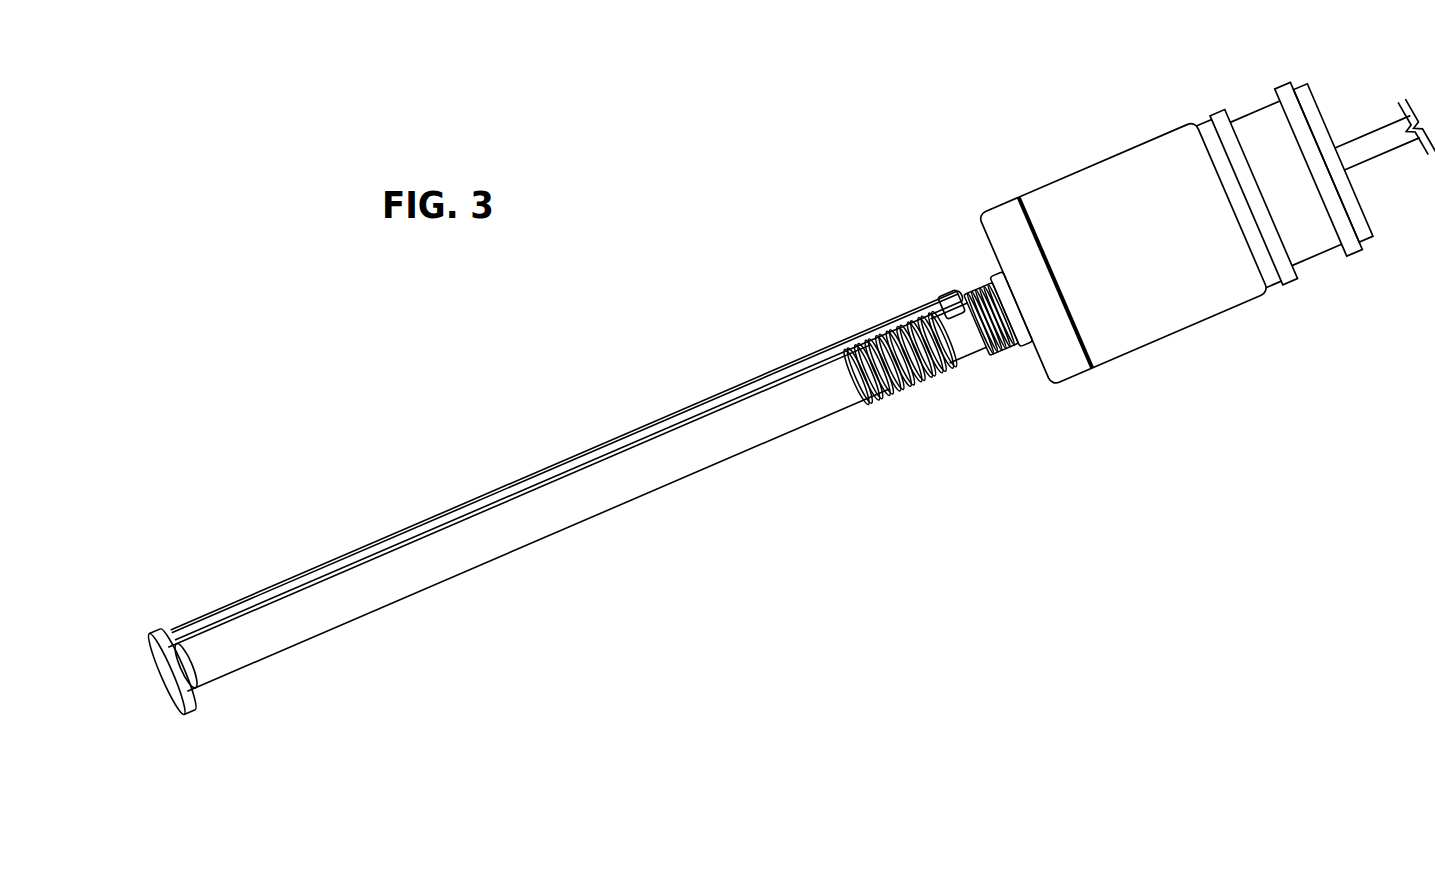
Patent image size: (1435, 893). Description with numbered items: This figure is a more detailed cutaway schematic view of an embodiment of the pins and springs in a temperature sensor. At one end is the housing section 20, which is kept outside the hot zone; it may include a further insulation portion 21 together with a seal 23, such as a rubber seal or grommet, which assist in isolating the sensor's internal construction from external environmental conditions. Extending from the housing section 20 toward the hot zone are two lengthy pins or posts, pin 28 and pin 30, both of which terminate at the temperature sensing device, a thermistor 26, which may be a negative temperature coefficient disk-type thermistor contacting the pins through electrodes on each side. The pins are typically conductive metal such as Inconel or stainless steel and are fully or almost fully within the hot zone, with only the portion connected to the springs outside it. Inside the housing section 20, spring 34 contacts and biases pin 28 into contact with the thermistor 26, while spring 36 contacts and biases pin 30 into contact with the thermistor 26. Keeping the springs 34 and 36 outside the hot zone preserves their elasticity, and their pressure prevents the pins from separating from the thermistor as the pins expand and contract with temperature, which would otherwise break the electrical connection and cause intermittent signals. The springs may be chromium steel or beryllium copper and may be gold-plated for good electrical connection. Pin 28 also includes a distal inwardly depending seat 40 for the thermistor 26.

The housing section 20 is at (1207, 340).
The insulation portion 21 is at (1063, 200).
The seal 23 is at (1240, 118).
The thermistor 26 is at (205, 684).
The pin 28 is at (760, 378).
The pin 30 is at (787, 417).
The spring 34 is at (966, 276).
The spring 36 is at (927, 390).
The seat 40 is at (163, 688).